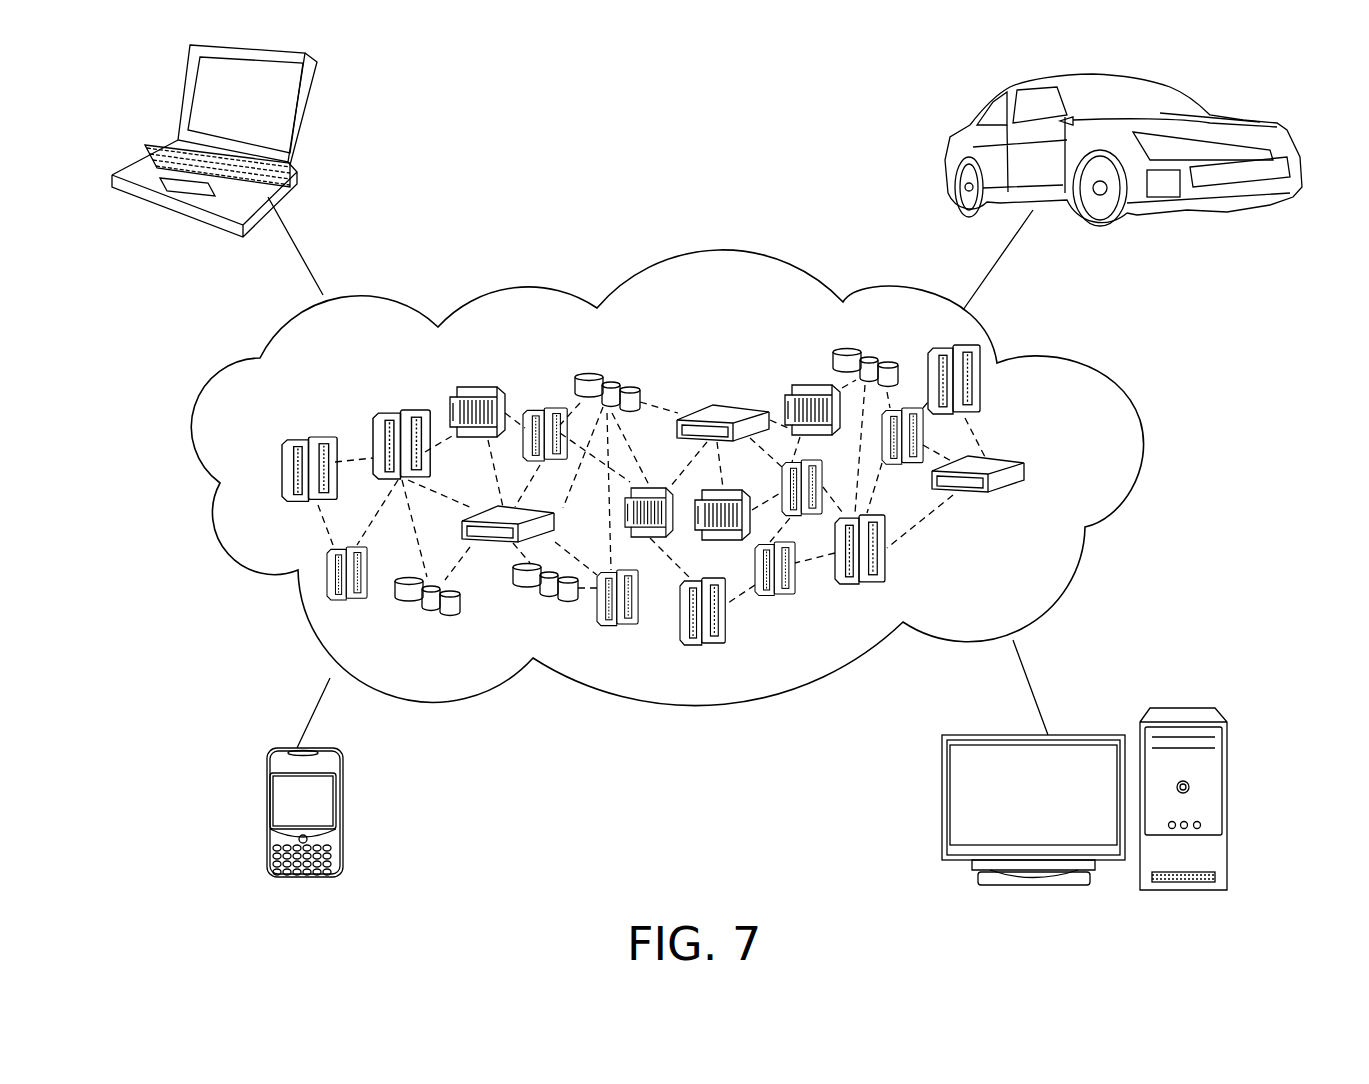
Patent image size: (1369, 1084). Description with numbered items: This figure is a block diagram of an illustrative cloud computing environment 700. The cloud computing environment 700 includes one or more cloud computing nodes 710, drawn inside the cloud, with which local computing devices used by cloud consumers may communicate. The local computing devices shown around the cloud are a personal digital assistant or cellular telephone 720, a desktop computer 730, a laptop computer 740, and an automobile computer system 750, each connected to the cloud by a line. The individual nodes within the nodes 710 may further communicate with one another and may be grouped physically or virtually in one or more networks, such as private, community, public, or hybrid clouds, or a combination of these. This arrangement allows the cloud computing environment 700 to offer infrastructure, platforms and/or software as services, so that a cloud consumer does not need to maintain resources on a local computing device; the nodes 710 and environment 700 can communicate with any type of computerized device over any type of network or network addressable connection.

The cloud computing environment 700 is at (220, 408).
The cloud computing nodes 710 is at (217, 527).
The personal digital assistant or cellular telephone 720 is at (265, 790).
The desktop computer 730 is at (942, 790).
The laptop computer 740 is at (178, 130).
The automobile computer system 750 is at (950, 132).